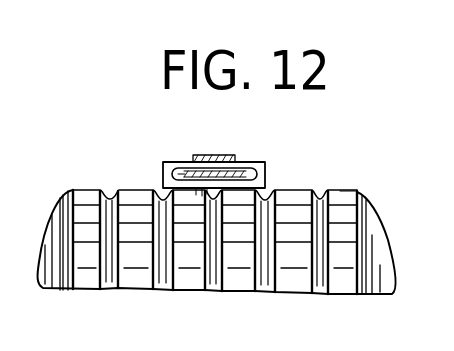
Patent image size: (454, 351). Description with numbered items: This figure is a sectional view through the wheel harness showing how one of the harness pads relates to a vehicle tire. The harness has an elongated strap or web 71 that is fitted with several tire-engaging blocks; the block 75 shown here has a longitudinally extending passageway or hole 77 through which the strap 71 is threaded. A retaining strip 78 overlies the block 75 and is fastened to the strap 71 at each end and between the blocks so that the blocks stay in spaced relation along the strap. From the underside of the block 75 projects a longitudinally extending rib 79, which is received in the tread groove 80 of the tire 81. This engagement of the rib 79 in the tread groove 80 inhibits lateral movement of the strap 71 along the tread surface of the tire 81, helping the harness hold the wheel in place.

The strap 71 is at (183, 170).
The tire-engaging block 75 is at (265, 170).
The passageway 77 is at (250, 176).
The retaining strip 78 is at (222, 155).
The rib 79 is at (212, 192).
The tread groove 80 is at (212, 267).
The tire 81 is at (350, 192).